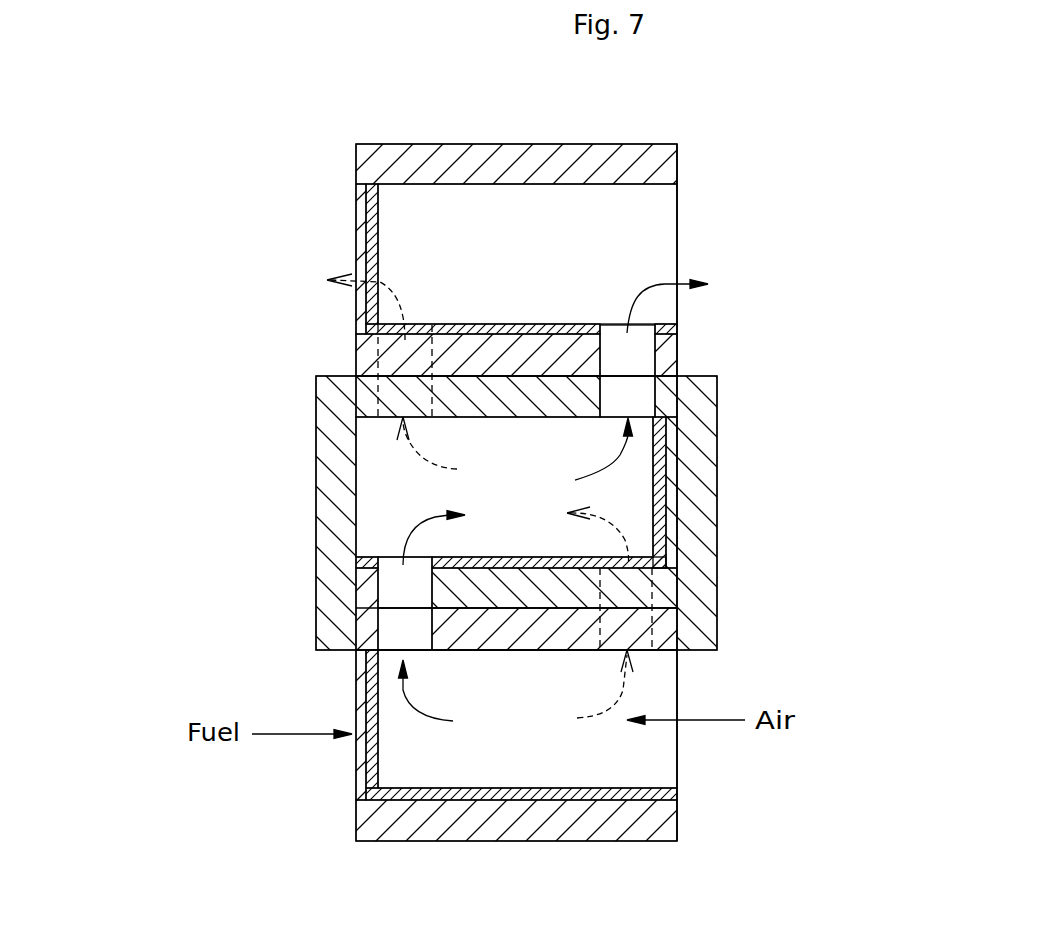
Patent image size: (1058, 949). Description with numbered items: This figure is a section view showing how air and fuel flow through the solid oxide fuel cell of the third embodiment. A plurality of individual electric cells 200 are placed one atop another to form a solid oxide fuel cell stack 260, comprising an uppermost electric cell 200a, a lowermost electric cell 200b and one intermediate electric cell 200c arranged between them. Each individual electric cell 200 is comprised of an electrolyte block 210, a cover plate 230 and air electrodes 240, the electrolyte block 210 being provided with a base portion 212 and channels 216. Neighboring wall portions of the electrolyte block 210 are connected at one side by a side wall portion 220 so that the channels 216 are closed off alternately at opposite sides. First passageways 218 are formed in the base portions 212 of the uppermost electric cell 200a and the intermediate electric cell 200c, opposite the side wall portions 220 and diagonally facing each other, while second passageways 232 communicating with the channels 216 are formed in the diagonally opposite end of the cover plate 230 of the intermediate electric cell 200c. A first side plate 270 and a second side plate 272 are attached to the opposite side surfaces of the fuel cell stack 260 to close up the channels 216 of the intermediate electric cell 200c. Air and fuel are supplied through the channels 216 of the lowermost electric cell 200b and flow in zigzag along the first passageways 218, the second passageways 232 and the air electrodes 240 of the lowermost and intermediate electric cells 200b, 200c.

The individual electric cell 200 is at (116, 389).
The uppermost electric cell 200a is at (341, 313).
The lowermost electric cell 200b is at (340, 711).
The intermediate electric cell 200c is at (299, 506).
The electrolyte block 210 is at (696, 210).
The base portion 212 is at (485, 360).
The channel 216 is at (600, 236).
The first passageway 218 is at (400, 345).
The side wall portion 220 is at (355, 220).
The cover plate 230 is at (640, 165).
The second passageway 232 is at (400, 392).
The air electrode 240 is at (525, 335).
The solid oxide fuel cell stack 260 is at (263, 164).
The first side plate 270 is at (705, 435).
The second side plate 272 is at (335, 490).